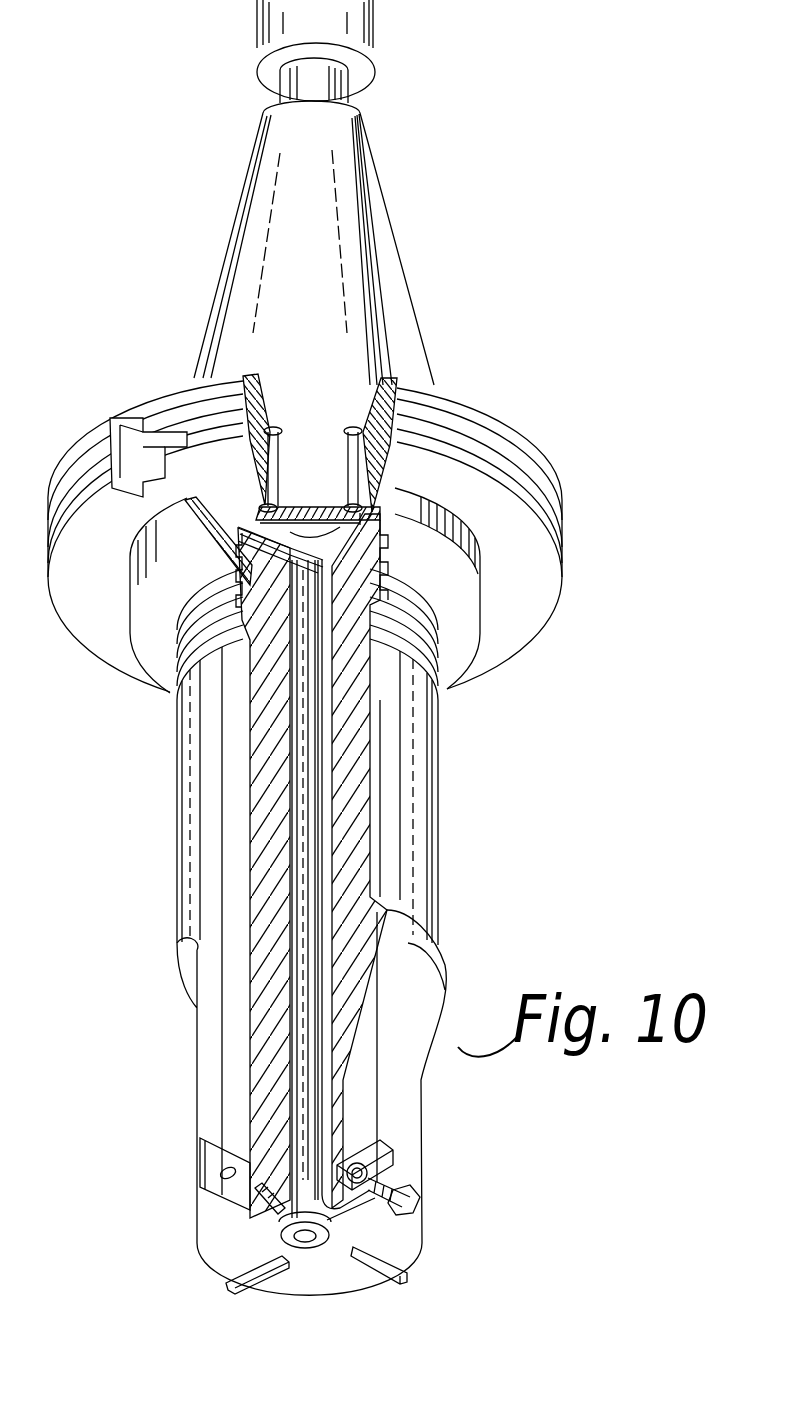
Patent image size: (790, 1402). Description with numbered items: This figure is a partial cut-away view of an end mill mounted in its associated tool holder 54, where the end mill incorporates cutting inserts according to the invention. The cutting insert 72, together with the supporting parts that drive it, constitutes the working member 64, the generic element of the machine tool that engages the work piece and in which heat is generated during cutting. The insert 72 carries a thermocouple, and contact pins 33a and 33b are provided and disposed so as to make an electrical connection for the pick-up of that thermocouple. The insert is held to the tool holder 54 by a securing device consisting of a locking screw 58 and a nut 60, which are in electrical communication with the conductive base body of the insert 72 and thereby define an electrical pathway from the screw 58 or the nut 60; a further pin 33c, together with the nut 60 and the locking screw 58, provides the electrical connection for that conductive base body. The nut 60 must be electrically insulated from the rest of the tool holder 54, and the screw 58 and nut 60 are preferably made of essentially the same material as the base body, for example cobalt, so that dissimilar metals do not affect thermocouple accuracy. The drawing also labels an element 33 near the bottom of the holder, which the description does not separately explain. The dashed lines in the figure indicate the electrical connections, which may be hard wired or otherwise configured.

The tool holder 54 is at (417, 219).
The working member 64 is at (538, 645).
The contact pin 33b is at (350, 432).
The contact pin 33c is at (277, 432).
The cutting insert 72 is at (200, 1152).
The locking screw 58 is at (346, 1156).
The nut 60 is at (408, 1210).
The contact pin 33a is at (266, 1226).
The drive key 33 is at (400, 1252).